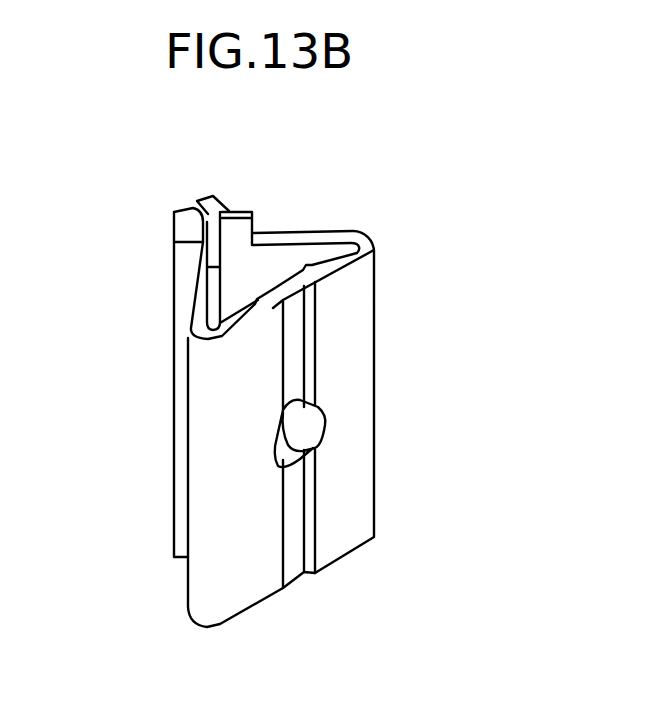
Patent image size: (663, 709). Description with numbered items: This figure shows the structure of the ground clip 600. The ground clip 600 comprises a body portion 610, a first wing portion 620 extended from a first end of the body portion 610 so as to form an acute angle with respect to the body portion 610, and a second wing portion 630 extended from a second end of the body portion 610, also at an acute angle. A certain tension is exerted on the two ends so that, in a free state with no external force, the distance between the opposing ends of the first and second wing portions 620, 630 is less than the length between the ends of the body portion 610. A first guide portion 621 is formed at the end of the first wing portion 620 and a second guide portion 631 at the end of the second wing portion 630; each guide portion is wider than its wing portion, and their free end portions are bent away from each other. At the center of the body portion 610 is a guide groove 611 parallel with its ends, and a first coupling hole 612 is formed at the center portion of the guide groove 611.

The ground clip 600 is at (424, 246).
The body portion 610 is at (362, 530).
The guide groove 611 is at (287, 563).
The first coupling hole 612 is at (300, 432).
The first wing portion 620 is at (330, 231).
The first guide portion 621 is at (223, 211).
The second wing portion 630 is at (190, 301).
The second guide portion 631 is at (202, 222).